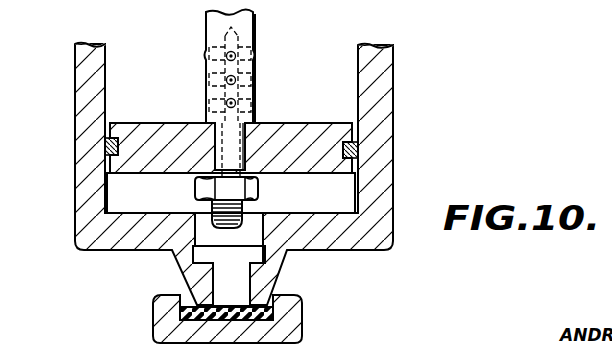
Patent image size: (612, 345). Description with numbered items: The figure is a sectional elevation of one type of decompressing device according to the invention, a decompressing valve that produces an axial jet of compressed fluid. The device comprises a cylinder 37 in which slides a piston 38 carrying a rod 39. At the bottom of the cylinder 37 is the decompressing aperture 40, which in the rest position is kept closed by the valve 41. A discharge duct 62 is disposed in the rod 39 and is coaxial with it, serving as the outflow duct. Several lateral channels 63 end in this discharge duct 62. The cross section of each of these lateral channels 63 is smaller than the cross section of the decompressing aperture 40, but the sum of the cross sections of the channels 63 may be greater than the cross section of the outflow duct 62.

The cylinder 37 is at (383, 188).
The piston 38 is at (320, 140).
The rod 39 is at (212, 23).
The decompressing aperture 40 is at (240, 278).
The valve 41 is at (283, 310).
The discharge duct 62 is at (228, 66).
The lateral channels 63 is at (253, 57).